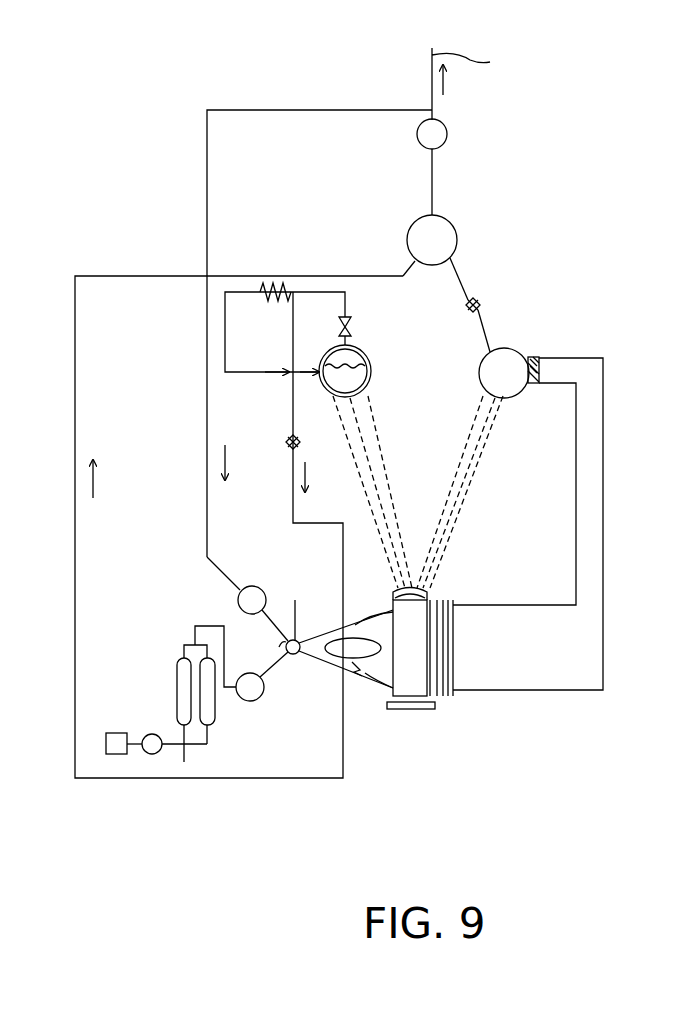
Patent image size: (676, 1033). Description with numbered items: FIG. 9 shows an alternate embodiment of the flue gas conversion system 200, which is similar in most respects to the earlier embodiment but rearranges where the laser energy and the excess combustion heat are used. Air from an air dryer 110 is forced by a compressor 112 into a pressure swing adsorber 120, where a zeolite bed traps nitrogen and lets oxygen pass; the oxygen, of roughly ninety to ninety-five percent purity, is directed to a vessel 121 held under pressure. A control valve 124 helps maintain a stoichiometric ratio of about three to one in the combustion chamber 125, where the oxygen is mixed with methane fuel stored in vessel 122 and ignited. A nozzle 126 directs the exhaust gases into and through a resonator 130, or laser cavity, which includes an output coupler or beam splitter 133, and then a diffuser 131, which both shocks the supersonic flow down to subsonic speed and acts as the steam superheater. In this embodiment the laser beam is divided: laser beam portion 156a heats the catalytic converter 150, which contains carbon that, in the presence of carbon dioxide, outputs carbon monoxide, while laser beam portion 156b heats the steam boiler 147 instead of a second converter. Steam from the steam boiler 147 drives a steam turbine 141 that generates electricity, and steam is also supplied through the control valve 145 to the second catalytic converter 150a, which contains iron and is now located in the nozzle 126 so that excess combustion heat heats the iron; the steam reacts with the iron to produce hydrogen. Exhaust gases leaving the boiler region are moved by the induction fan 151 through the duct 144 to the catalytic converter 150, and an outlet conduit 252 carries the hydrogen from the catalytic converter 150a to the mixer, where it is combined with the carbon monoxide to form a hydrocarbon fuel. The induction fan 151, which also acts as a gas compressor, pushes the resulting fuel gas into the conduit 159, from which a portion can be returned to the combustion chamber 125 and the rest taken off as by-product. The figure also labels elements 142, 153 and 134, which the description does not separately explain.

The water treatment system 200 is at (135, 223).
The outlet or conduit 252 is at (345, 276).
The conduit or outlet 159 is at (482, 83).
The induction fan 151 is at (447, 128).
The valve 153 is at (477, 298).
The catalytic converter 150 is at (518, 350).
The laser beam portion 156a is at (483, 468).
The laser beam portion 156b is at (383, 457).
The heater 142 is at (262, 292).
The steam turbine 141 is at (352, 326).
The steam boiler 147 is at (406, 396).
The control valve 145 is at (289, 440).
The resonator 130 is at (418, 710).
The output coupler and/or beam splitter 133 is at (430, 597).
The diffuser 131 is at (455, 603).
The layer 134 is at (443, 697).
The combustion chamber 125 is at (295, 600).
The control valve 124 is at (284, 647).
The nozzle 126 is at (318, 667).
The second catalytic converter 150a is at (358, 676).
The vessel 122 is at (238, 597).
The vessel 121 is at (258, 698).
The pressure swing adsorber 120 is at (182, 658).
The air dryer 110 is at (116, 733).
The compressor 112 is at (156, 753).
The duct 144 is at (585, 690).